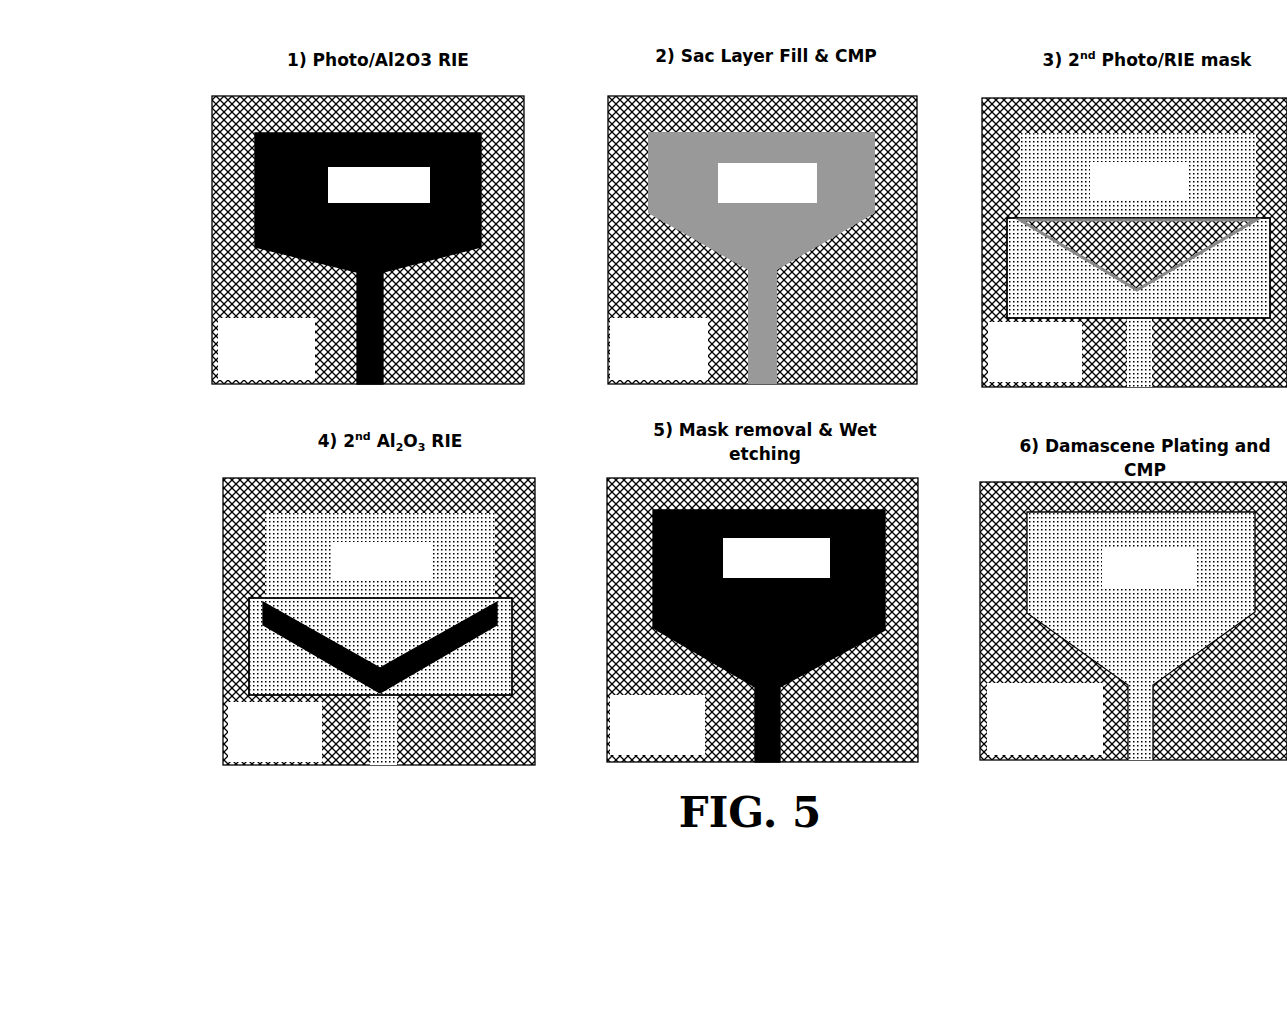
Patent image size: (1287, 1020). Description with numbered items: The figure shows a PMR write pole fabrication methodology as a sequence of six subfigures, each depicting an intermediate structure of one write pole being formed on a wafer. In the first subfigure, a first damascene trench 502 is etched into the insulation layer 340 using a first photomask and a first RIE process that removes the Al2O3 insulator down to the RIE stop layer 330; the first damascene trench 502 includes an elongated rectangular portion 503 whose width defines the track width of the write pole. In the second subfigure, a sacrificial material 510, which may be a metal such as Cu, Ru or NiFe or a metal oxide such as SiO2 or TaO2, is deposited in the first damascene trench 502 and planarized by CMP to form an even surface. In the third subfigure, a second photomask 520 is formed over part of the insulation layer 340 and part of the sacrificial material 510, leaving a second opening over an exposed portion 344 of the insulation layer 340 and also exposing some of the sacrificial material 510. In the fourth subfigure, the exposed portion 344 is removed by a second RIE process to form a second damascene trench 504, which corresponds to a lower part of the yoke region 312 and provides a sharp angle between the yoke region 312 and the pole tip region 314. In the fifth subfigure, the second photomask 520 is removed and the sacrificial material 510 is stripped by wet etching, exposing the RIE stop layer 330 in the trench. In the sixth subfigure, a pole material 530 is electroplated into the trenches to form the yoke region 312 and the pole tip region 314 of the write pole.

The RIE stop layer 330 is at (570, 447).
The insulation layer 340 is at (749, 430).
The sacrificial material 510 is at (760, 448).
The second photomask 520 is at (759, 456).
The pole material 530 is at (1141, 636).
The first damascene trench 502 is at (373, 337).
The elongated rectangular portion 503 is at (392, 272).
The exposed portion of the insulation layer 344 is at (1215, 267).
The second damascene trench 504 is at (457, 643).
The yoke region 312 is at (1163, 530).
The pole tip region 314 is at (1143, 737).